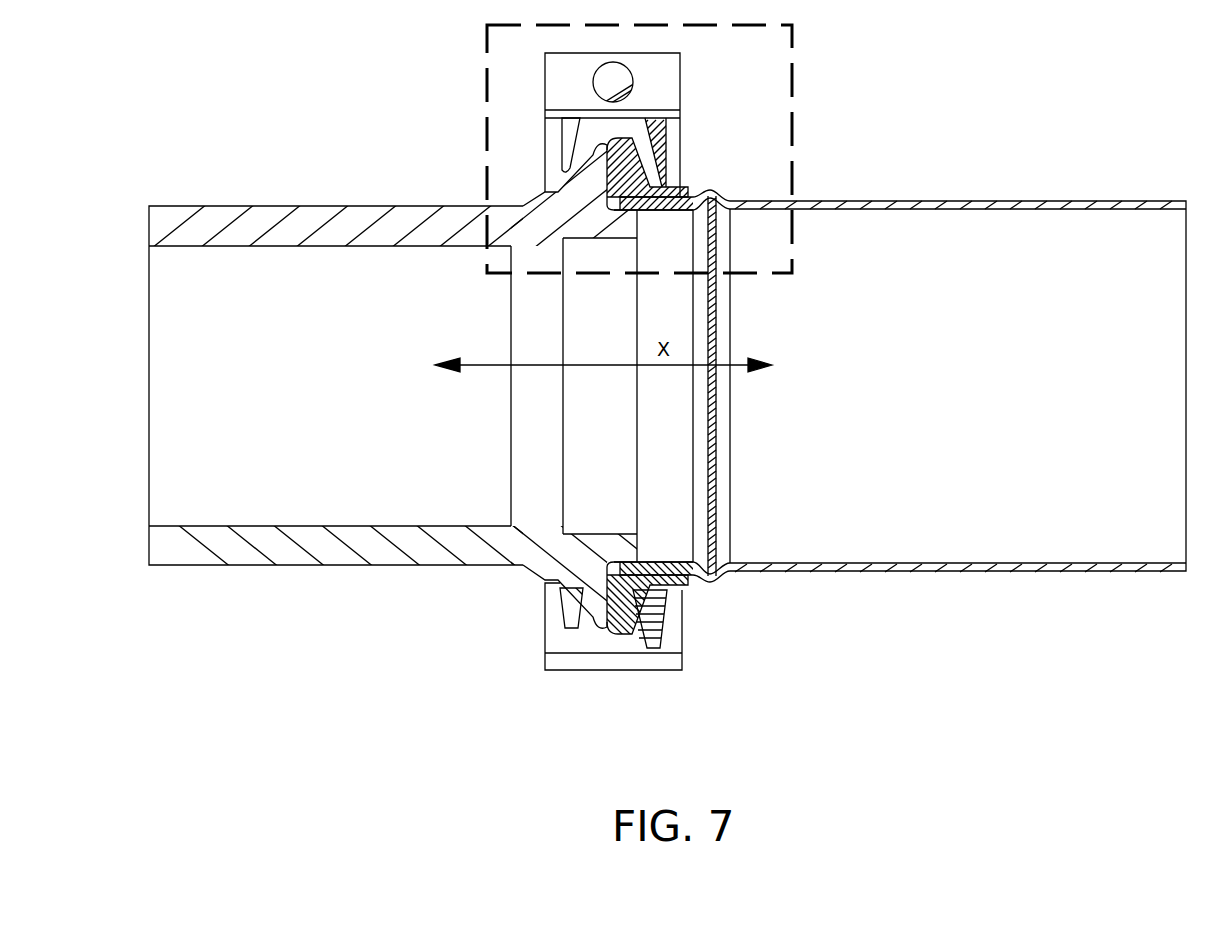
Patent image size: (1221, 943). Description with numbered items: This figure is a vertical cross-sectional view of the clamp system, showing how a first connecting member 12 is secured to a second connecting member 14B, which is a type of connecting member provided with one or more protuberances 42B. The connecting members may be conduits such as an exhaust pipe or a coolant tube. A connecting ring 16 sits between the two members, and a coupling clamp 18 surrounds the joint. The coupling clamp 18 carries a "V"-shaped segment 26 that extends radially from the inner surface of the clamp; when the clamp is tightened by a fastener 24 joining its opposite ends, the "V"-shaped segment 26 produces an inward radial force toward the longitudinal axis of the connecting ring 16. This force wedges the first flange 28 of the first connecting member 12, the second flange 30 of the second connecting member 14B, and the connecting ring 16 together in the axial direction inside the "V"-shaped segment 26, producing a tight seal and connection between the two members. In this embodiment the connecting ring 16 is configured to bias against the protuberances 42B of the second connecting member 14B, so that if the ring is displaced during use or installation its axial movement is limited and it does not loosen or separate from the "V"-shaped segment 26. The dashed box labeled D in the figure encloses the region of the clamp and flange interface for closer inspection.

The first connecting member 12 is at (222, 543).
The second connecting member 14B is at (862, 568).
The connecting ring 16 is at (678, 182).
The coupling clamp 18 is at (560, 662).
The fastener 24 is at (603, 65).
The "V"-shaped segment 26 is at (662, 183).
The first flange 28 is at (587, 152).
The second flange 30 is at (605, 145).
The protuberance 42B is at (705, 193).
The detail region D is at (792, 70).